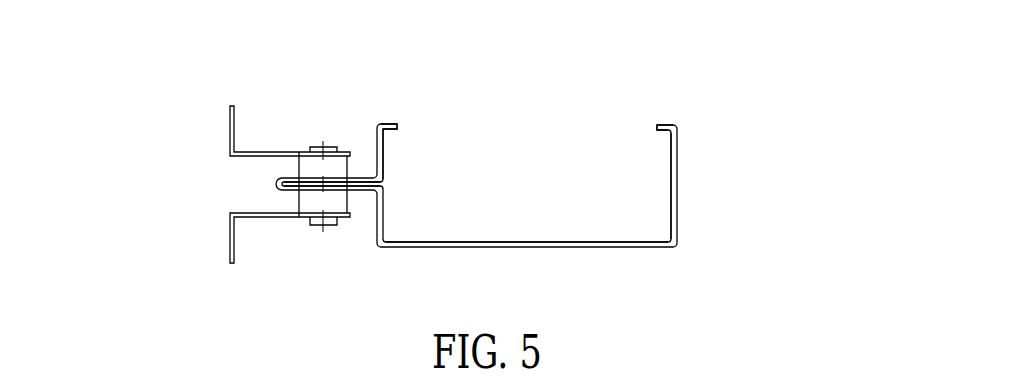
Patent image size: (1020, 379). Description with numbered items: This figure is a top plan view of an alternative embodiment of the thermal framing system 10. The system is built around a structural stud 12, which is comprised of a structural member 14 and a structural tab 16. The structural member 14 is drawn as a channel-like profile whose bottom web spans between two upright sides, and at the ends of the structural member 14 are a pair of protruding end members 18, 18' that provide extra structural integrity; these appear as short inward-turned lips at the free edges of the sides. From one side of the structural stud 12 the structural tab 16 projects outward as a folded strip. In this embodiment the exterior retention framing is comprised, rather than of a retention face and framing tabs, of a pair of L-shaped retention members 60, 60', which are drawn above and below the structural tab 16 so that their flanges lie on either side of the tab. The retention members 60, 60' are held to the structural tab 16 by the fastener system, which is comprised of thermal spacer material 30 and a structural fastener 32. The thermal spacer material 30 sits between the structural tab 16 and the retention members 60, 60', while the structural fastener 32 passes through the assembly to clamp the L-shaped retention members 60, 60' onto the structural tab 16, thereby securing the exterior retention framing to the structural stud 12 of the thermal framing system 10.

The thermal framing system 10 is at (697, 192).
The structural stud 12 is at (596, 102).
The structural member 14 is at (526, 240).
The structural tab 16 is at (358, 176).
The protruding end member 18 is at (400, 76).
The protruding end member 18' is at (677, 76).
The thermal spacer material 30 is at (298, 202).
The structural fastener 32 is at (318, 167).
The L-shaped retention member 60 is at (313, 120).
The L-shaped retention member 60' is at (305, 259).